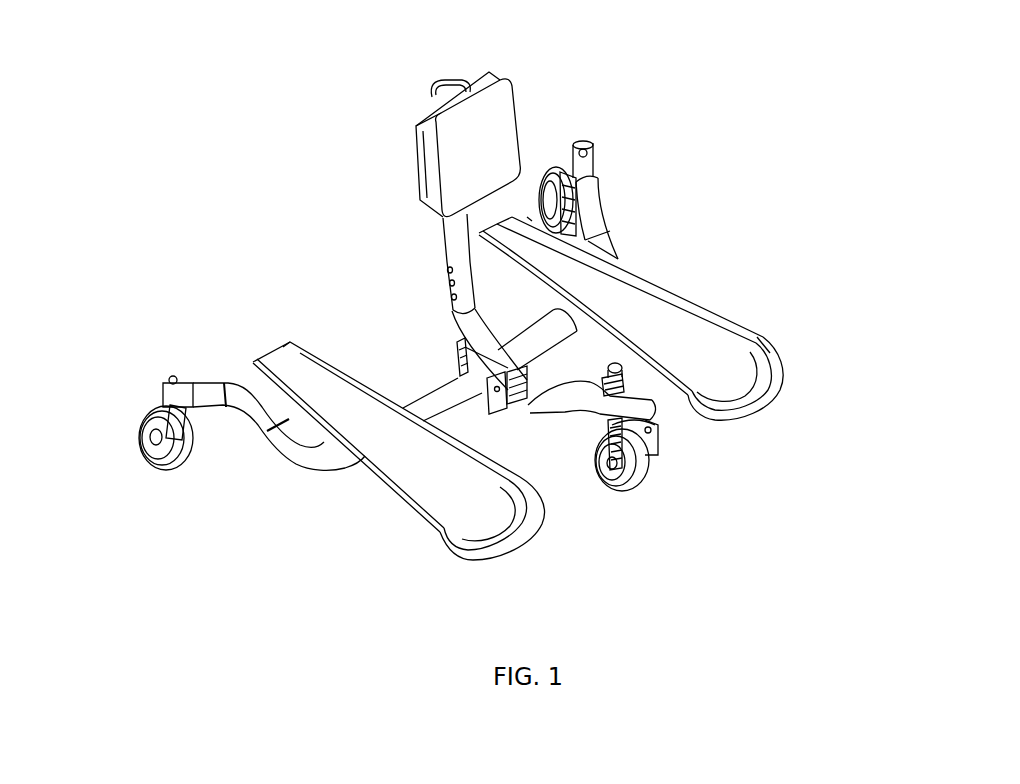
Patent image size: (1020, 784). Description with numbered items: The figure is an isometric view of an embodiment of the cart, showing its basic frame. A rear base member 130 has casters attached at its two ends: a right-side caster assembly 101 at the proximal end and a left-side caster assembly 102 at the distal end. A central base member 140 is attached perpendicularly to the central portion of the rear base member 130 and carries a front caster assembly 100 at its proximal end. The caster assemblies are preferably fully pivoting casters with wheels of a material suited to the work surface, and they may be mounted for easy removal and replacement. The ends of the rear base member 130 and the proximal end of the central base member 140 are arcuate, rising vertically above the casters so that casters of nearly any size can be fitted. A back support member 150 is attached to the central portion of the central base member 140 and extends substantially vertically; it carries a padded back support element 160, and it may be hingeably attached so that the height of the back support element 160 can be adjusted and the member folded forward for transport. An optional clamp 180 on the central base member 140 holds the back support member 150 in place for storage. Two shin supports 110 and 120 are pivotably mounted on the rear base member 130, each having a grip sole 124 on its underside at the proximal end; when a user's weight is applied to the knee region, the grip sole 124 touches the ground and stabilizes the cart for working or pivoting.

The front caster assembly 100 is at (628, 452).
The right-side caster assembly 101 is at (165, 427).
The left-side caster assembly 102 is at (548, 180).
The shin support 110 is at (407, 460).
The shin support 120 is at (627, 308).
The grip sole 124 is at (474, 558).
The rear base member 130 is at (430, 403).
The central base member 140 is at (547, 412).
The back support member 150 is at (457, 258).
The back support element 160 is at (493, 123).
The clamp 180 is at (590, 355).